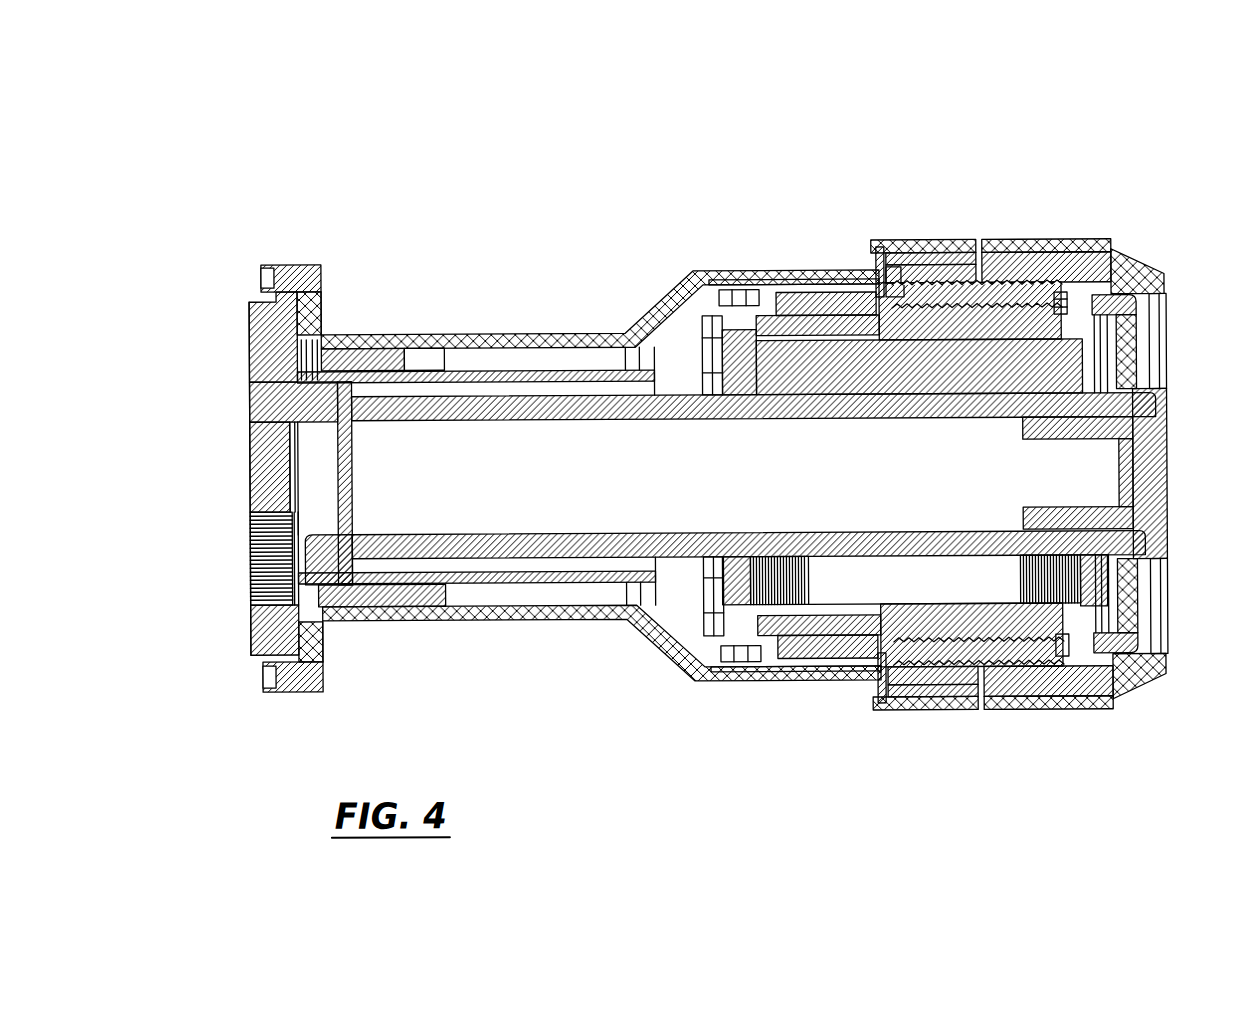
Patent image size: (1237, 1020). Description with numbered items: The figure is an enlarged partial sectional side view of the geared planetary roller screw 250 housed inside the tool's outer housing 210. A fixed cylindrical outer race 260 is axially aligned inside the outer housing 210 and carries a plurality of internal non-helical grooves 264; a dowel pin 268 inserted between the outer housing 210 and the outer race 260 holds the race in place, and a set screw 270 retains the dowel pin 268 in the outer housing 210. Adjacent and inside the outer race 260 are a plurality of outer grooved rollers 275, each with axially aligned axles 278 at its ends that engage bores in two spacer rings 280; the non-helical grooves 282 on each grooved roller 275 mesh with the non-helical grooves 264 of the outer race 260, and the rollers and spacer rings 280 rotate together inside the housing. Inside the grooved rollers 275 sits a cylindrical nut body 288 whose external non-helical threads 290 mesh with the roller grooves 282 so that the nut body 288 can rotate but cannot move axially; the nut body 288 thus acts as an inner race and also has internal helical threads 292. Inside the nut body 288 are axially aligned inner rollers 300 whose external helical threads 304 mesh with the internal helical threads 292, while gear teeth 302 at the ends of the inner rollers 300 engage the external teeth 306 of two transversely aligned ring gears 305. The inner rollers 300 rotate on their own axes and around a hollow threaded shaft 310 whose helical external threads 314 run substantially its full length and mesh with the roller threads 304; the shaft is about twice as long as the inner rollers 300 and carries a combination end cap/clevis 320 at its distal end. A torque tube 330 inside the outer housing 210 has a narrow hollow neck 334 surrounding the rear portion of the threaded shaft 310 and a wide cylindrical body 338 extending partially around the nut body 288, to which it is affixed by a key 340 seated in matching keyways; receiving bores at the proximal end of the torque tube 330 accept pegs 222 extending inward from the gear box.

The geared planetary roller screw 250 is at (258, 110).
The pegs 222 is at (250, 398).
The outer housing 210 is at (673, 283).
The inner rollers 300 is at (700, 277).
The torque tube 330 is at (597, 362).
The narrow cylindrical hollow neck 334 is at (524, 382).
The threaded shaft 310 is at (494, 388).
The helical external threads 314 is at (587, 566).
The wide cylindrical body 338 is at (734, 276).
The key 340 is at (761, 282).
The ring gears 305 is at (821, 288).
The gear teeth 306 is at (745, 365).
The gear teeth 302 is at (755, 349).
The external helical threads 304 is at (832, 349).
The internal helical threads 292 is at (946, 349).
The outer grooved rollers 275 is at (878, 249).
The axles 278 is at (883, 282).
The spacer rings 280 is at (907, 277).
The non-helical grooves 264 is at (952, 262).
The dowel pin 268 is at (915, 247).
The outer race 260 is at (942, 276).
The non-helical grooves 282 is at (1002, 311).
The nut body 288 is at (1032, 298).
The external non-helical threads 290 is at (1088, 278).
The set screw 270 is at (1113, 260).
The end cap/clevis 320 is at (1110, 290).